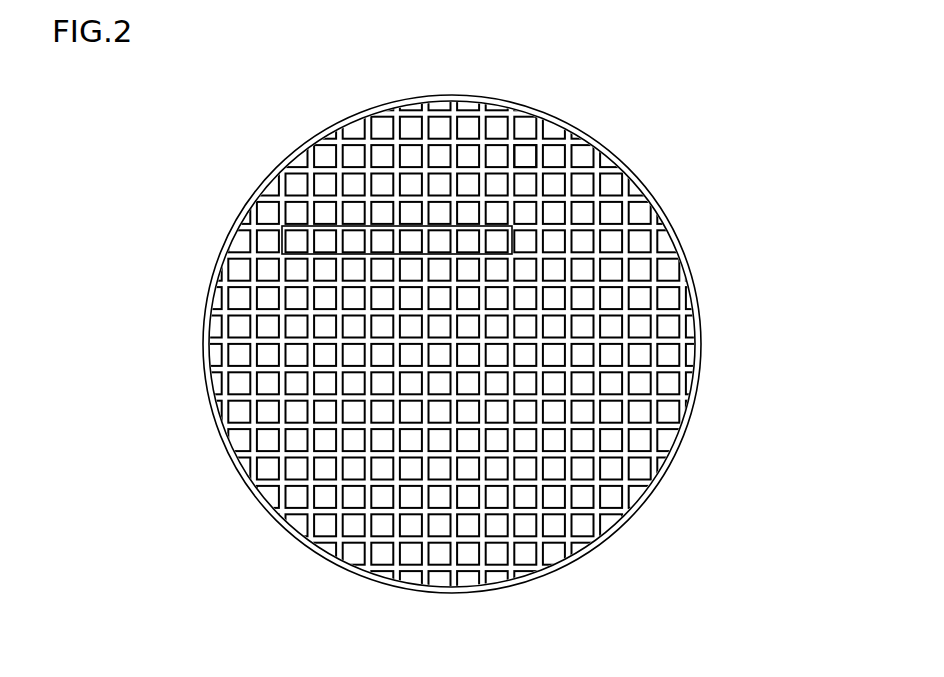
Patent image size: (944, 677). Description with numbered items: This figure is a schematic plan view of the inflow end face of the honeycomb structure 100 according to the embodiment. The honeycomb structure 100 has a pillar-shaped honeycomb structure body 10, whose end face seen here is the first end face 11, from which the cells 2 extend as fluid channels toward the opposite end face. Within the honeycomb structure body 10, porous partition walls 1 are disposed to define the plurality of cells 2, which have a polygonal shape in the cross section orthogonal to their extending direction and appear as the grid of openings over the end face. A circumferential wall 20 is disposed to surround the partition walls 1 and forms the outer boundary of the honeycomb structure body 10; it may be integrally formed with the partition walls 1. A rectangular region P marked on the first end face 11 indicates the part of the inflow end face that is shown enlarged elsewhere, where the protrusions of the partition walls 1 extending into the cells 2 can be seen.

The honeycomb structure 100 is at (786, 101).
The honeycomb structure body 10 is at (496, 322).
The first end face 11 is at (272, 174).
The circumferential wall 20 is at (644, 503).
The partition walls 1 is at (423, 152).
The cells 2 is at (527, 155).
The region P is at (283, 236).